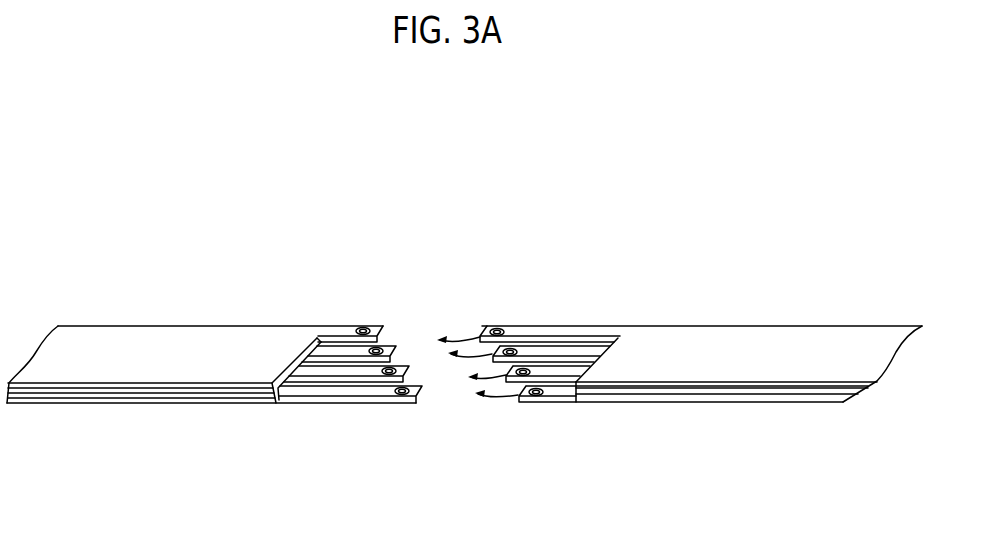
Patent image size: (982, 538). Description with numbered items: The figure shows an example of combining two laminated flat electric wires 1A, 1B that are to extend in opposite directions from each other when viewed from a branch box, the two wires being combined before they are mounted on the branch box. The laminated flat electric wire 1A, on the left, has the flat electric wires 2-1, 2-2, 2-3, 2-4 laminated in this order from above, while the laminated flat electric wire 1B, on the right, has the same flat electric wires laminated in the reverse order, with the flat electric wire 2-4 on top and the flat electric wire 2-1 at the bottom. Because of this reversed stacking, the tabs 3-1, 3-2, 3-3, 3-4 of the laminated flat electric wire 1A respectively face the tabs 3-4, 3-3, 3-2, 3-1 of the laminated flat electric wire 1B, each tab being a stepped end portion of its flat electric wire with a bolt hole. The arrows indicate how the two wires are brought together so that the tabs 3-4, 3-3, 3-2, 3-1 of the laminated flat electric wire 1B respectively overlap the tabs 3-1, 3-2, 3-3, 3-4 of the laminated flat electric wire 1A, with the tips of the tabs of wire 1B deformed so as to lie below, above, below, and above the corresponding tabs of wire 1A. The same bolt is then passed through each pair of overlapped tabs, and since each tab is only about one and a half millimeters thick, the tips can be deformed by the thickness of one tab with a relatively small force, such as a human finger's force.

The laminated flat electric wire 1A is at (211, 427).
The laminated flat electric wire 1B is at (731, 365).
The flat electric wire 2-1 is at (58, 385).
The flat electric wire 2-2 is at (103, 391).
The flat electric wire 2-3 is at (147, 396).
The flat electric wire 2-4 is at (190, 401).
The tab 3-1 is at (373, 335).
The tab 3-2 is at (386, 355).
The tab 3-3 is at (399, 375).
The tab 3-4 is at (412, 395).